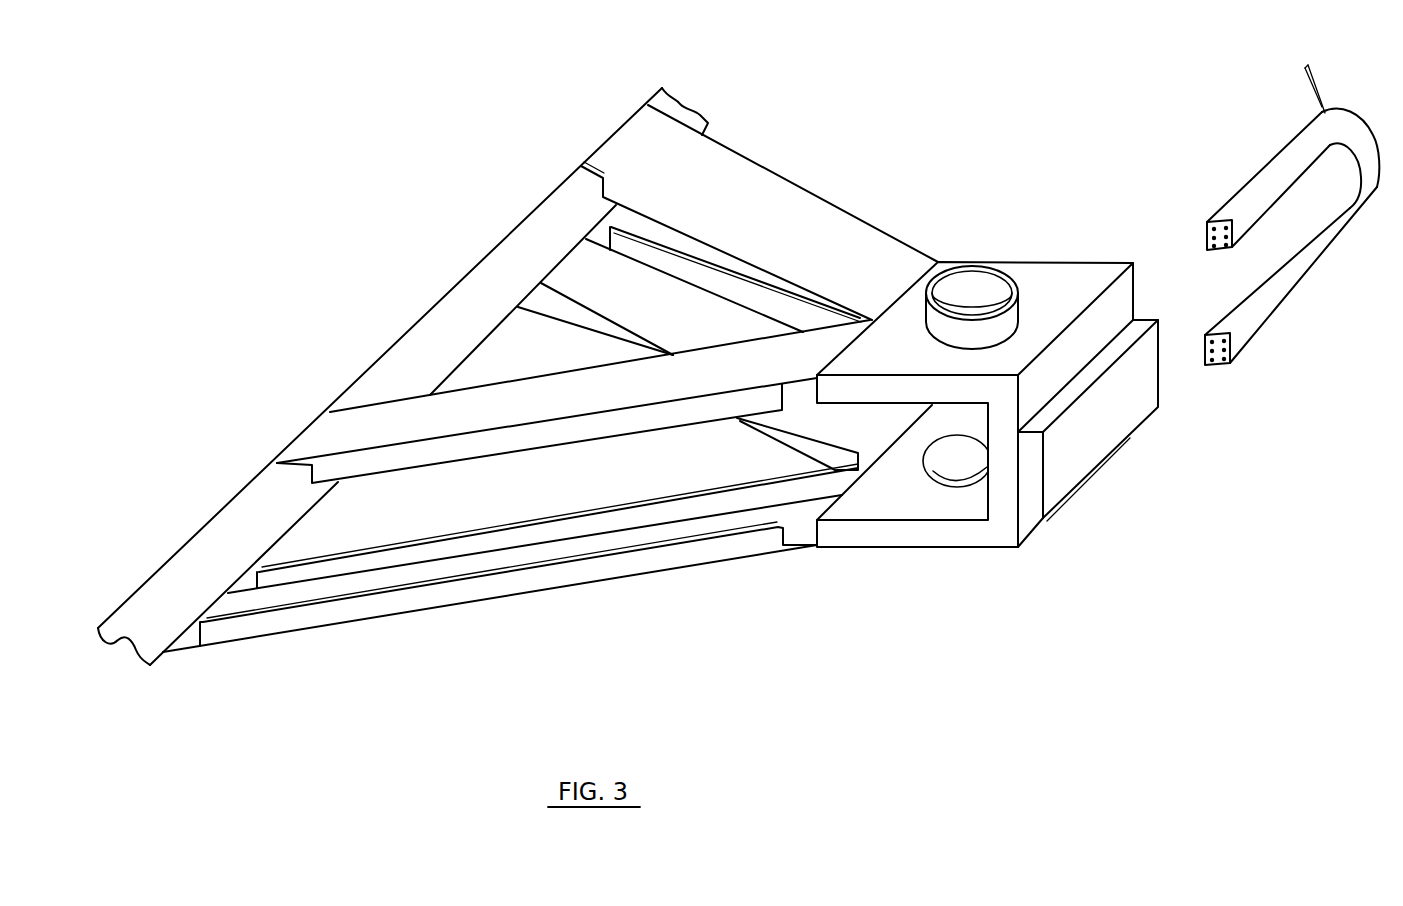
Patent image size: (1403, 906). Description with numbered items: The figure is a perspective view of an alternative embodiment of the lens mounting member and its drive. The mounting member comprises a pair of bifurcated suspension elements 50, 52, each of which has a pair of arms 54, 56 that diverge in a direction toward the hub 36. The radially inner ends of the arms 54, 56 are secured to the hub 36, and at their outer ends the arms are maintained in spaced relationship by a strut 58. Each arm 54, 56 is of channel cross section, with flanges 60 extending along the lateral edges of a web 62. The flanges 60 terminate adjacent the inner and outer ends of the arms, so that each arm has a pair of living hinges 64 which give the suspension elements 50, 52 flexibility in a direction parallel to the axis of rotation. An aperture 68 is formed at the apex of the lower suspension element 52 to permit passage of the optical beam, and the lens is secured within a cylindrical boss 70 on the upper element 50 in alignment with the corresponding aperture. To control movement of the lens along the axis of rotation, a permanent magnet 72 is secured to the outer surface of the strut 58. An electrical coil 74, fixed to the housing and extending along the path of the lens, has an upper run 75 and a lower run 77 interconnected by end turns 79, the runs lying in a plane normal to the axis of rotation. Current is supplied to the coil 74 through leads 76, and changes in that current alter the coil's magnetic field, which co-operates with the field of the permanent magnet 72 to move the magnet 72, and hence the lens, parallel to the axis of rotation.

The hub 36 is at (350, 302).
The suspension element 50 is at (812, 185).
The suspension element 52 is at (627, 565).
The arm 54 is at (759, 212).
The arm 56 is at (573, 391).
The strut 58 is at (1004, 533).
The flange 60 is at (376, 437).
The web 62 is at (573, 401).
The living hinge 64 is at (615, 141).
The aperture 68 is at (975, 275).
The cylindrical boss 70 is at (1022, 312).
The permanent magnet 72 is at (1098, 448).
The electrical coil 74 is at (1256, 200).
The upper run 75 is at (1270, 188).
The leads 76 is at (1305, 69).
The lower run 77 is at (1270, 313).
The end turn 79 is at (1343, 127).